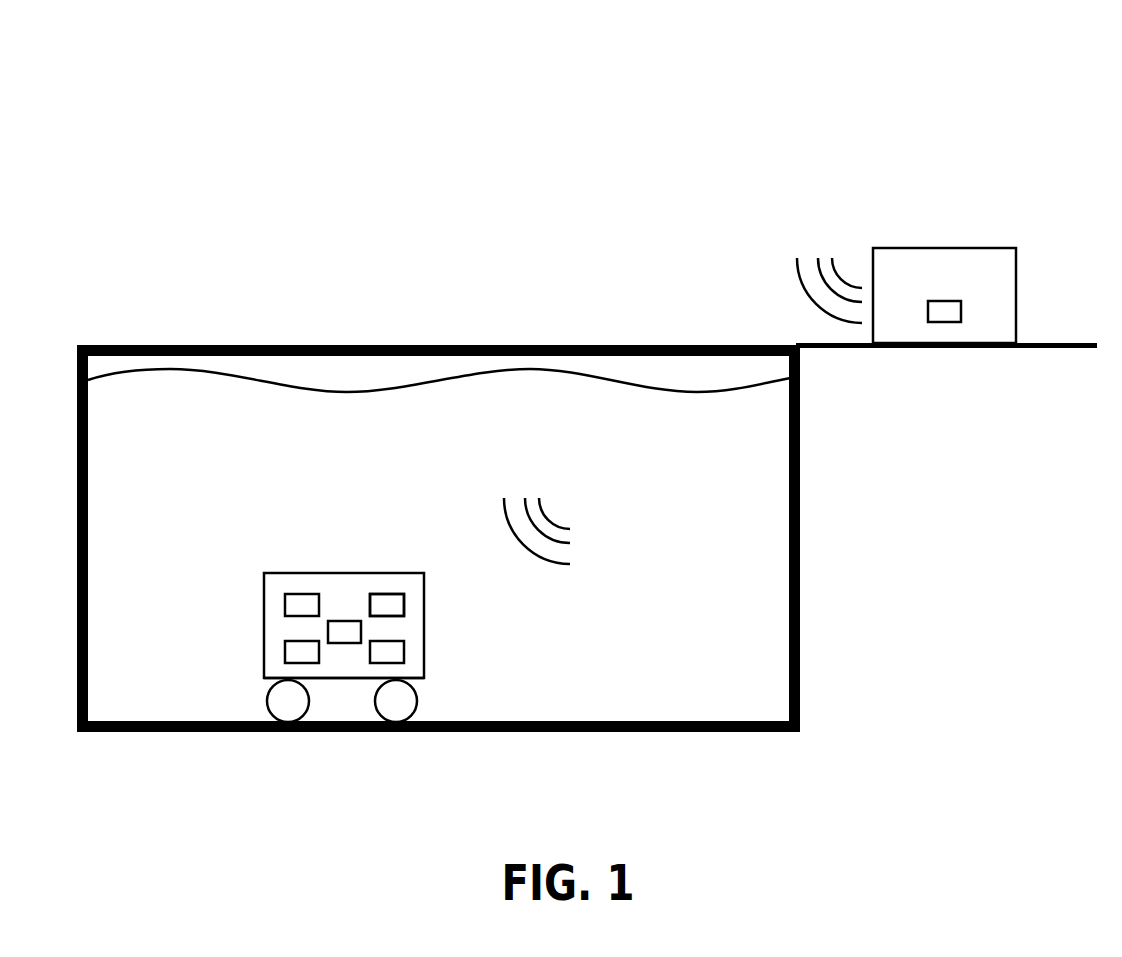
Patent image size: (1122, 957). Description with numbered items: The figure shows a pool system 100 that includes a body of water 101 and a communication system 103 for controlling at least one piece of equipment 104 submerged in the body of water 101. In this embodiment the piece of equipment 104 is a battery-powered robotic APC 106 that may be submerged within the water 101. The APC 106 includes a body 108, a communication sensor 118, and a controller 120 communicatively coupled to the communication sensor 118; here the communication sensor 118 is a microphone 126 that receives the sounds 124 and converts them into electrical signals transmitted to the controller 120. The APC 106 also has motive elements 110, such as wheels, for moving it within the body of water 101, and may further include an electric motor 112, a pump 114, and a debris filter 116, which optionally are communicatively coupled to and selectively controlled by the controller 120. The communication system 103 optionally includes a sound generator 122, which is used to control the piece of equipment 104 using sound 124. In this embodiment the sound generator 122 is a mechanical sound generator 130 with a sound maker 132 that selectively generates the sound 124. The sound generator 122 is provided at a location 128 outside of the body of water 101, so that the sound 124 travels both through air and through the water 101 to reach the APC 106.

The pool system 100 is at (307, 165).
The body of water 101 is at (167, 467).
The communication system 103 is at (512, 277).
The piece of equipment 104 is at (329, 627).
The robotic APC 106 is at (263, 622).
The body 108 is at (358, 662).
The motive elements 110 is at (283, 705).
The electric motor 112 is at (302, 603).
The pump 114 is at (302, 653).
The debris filter 116 is at (387, 653).
The communication sensor 118 is at (381, 600).
The controller 120 is at (342, 623).
The sound generator 122 is at (912, 254).
The sound 124 is at (803, 283).
The microphone 126 is at (386, 606).
The location 128 is at (992, 173).
The mechanical sound generator 130 is at (954, 277).
The sound maker 132 is at (942, 312).